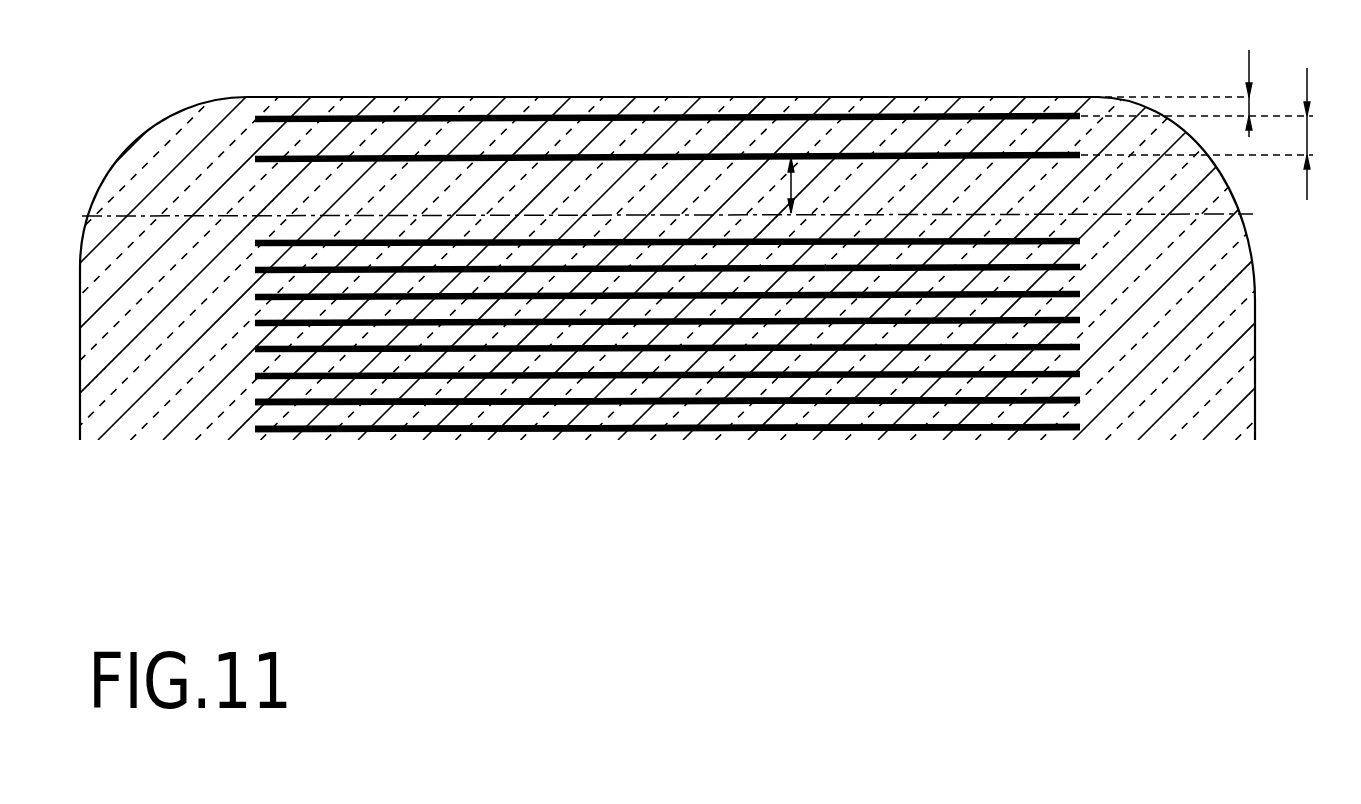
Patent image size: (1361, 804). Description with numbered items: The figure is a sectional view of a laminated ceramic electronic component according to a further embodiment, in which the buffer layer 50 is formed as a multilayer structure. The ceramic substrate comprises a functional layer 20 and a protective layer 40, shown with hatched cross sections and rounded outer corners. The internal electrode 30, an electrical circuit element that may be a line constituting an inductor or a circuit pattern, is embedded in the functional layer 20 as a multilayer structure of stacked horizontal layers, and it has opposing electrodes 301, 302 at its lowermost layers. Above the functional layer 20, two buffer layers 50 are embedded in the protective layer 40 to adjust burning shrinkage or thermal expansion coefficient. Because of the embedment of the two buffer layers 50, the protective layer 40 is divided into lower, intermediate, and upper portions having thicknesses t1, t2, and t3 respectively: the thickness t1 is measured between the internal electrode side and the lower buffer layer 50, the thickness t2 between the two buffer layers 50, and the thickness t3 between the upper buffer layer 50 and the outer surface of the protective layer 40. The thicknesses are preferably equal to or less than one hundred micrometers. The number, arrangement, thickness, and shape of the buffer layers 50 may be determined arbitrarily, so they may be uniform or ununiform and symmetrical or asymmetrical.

The functional layer 20 is at (1235, 288).
The internal electrode 30 is at (740, 438).
The protective layer 40 is at (1223, 194).
The buffer layer 50 is at (408, 116).
The opposing electrode 301 is at (1080, 428).
The opposing electrode 302 is at (1080, 400).
The thickness of lower protective layer t1 is at (793, 183).
The thickness of intermediate protective layer t2 is at (1307, 131).
The thickness of upper protective layer t3 is at (1249, 102).